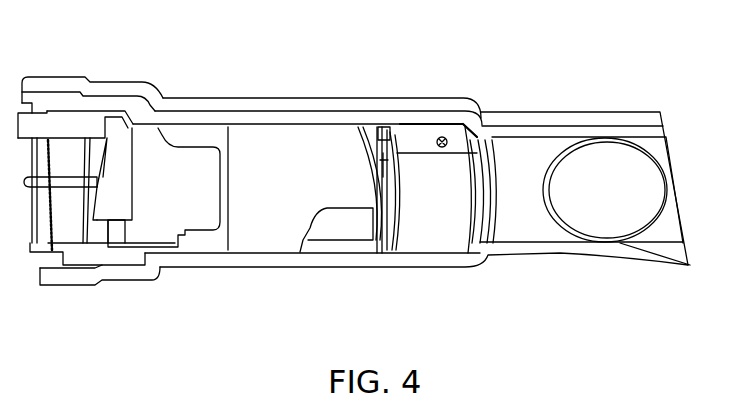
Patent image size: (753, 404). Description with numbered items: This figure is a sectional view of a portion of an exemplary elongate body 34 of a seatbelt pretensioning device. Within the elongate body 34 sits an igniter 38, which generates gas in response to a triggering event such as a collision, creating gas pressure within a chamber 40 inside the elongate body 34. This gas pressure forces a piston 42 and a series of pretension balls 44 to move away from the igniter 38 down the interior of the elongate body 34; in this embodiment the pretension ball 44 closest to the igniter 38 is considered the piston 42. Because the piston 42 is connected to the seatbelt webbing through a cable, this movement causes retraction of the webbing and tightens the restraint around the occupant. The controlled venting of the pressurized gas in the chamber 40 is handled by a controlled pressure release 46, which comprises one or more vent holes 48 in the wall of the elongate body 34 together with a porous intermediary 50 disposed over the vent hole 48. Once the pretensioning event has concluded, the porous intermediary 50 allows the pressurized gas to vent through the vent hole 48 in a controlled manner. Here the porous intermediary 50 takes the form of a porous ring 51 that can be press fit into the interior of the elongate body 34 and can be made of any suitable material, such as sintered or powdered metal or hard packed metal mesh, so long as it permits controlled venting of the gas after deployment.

The elongate body 34 is at (555, 112).
The igniter 38 is at (135, 183).
The chamber 40 is at (283, 168).
The piston 42 is at (604, 185).
The pretension balls 44 is at (627, 222).
The controlled pressure release 46 is at (463, 137).
The vent hole 48 is at (442, 137).
The porous intermediary 50 is at (416, 235).
The porous ring 51 is at (446, 225).